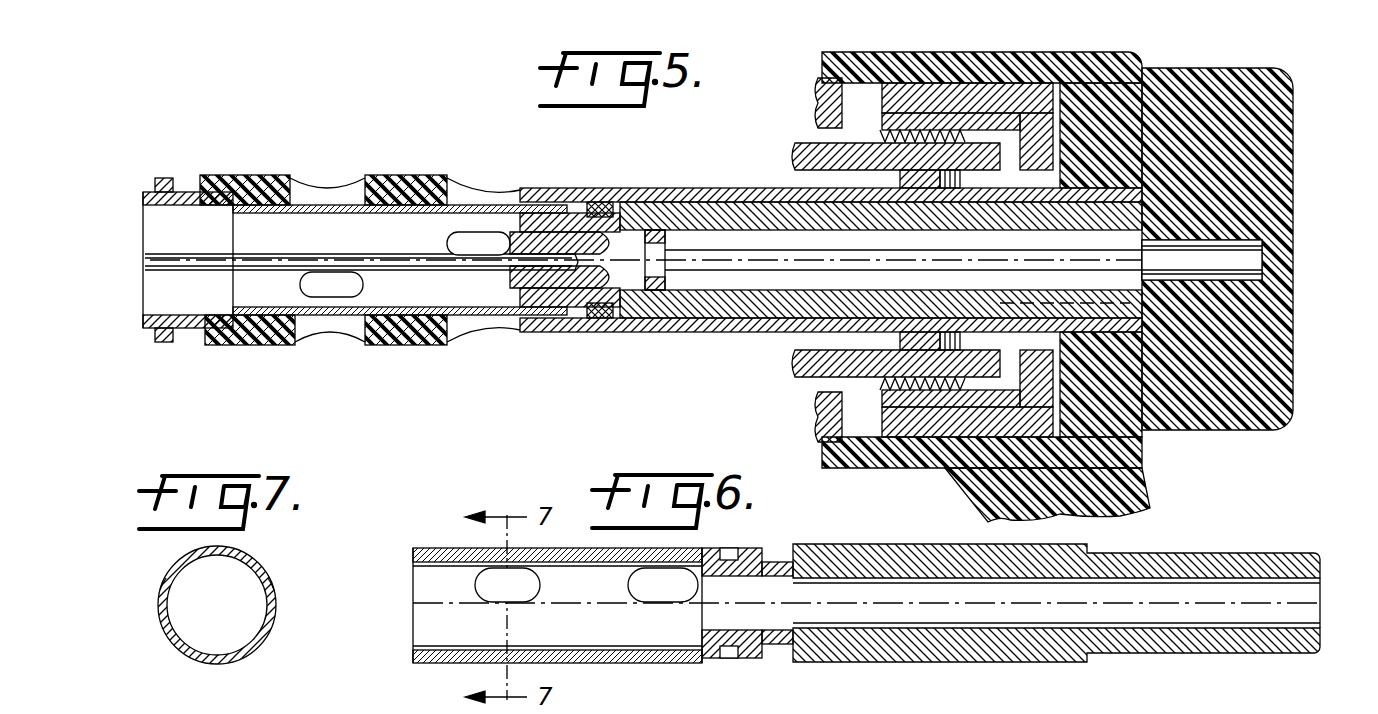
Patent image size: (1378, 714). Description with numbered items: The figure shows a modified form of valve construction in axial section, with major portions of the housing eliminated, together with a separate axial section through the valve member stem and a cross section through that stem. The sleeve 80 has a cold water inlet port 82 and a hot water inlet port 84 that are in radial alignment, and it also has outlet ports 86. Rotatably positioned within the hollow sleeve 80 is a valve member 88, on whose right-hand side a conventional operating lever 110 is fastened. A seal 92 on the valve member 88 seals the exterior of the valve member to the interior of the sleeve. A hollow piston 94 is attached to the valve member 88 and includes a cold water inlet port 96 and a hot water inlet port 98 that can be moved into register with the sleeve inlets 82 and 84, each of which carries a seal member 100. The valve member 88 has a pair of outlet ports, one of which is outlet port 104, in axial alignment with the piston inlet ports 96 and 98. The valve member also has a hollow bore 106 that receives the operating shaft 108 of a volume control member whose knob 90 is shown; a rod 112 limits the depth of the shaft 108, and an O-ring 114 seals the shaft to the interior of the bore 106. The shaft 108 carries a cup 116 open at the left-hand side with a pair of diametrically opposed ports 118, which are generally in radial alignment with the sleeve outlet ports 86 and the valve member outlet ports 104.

In FIG. 5, the sleeve 80 is at (688, 190).
In FIG. 5, the cold water inlet port 82 is at (334, 182).
In FIG. 5, the hot water inlet port 84 is at (342, 340).
In FIG. 5, the outlet ports 86 is at (518, 190).
In FIG. 5, the valve member 88 is at (748, 202).
In FIG. 5, the knob 90 is at (1296, 132).
In FIG. 5, the seal 92 is at (600, 320).
In FIG. 5, the hollow piston 94 is at (235, 208).
In FIG. 6, the hollow piston 94 is at (437, 662).
In FIG. 7, the hollow piston 94 is at (206, 662).
In FIG. 6, the cold water inlet port 96 is at (483, 600).
In FIG. 7, the cold water inlet port 96 is at (270, 594).
In FIG. 5, the hot water inlet port 98 is at (302, 285).
In FIG. 7, the hot water inlet port 98 is at (160, 590).
In FIG. 5, the seal member 100 is at (272, 176).
In FIG. 6, the outlet port 104 is at (661, 600).
In FIG. 5, the hollow bore 106 is at (872, 230).
In FIG. 6, the hollow bore 106 is at (1318, 599).
In FIG. 5, the operating shaft 108 is at (776, 332).
In FIG. 5, the operating lever 110 is at (1138, 66).
In FIG. 5, the rod 112 is at (150, 268).
In FIG. 5, the O-ring 114 is at (652, 292).
In FIG. 5, the cup 116 is at (424, 220).
In FIG. 5, the ports 118 is at (436, 284).